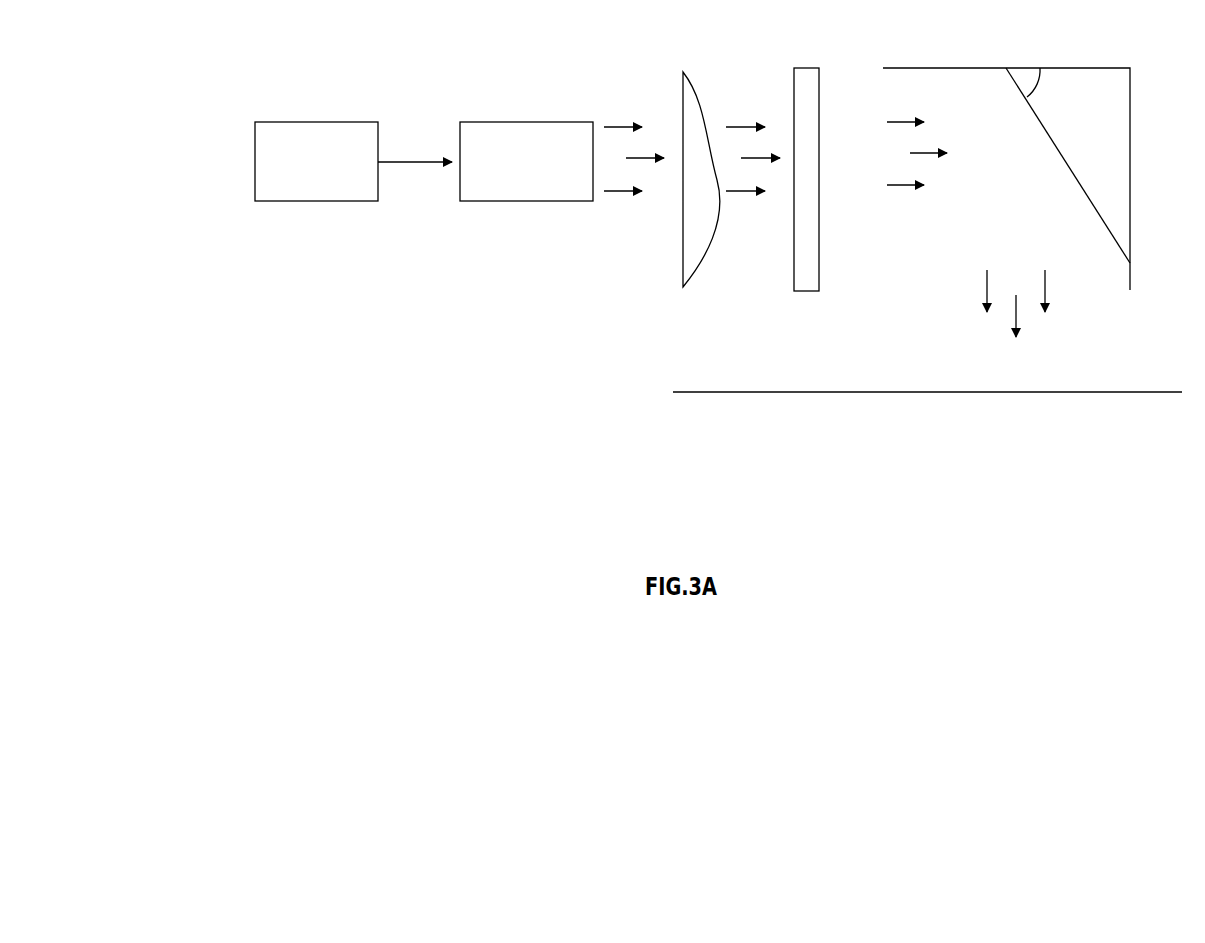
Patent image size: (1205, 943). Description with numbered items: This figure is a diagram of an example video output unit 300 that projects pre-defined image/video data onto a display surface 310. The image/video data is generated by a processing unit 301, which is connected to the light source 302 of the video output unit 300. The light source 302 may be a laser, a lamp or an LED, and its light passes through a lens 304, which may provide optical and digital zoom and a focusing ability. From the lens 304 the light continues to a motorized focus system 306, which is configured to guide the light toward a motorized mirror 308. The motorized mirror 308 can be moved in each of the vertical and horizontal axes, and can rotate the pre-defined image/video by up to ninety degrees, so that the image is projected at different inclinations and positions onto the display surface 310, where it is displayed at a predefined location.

The video output unit 300 is at (352, 427).
The processing unit 301 is at (292, 122).
The light source 302 is at (512, 122).
The lens 304 is at (698, 96).
The motorized focus system 306 is at (812, 68).
The motorized mirror 308 is at (950, 68).
The display surface 310 is at (830, 392).